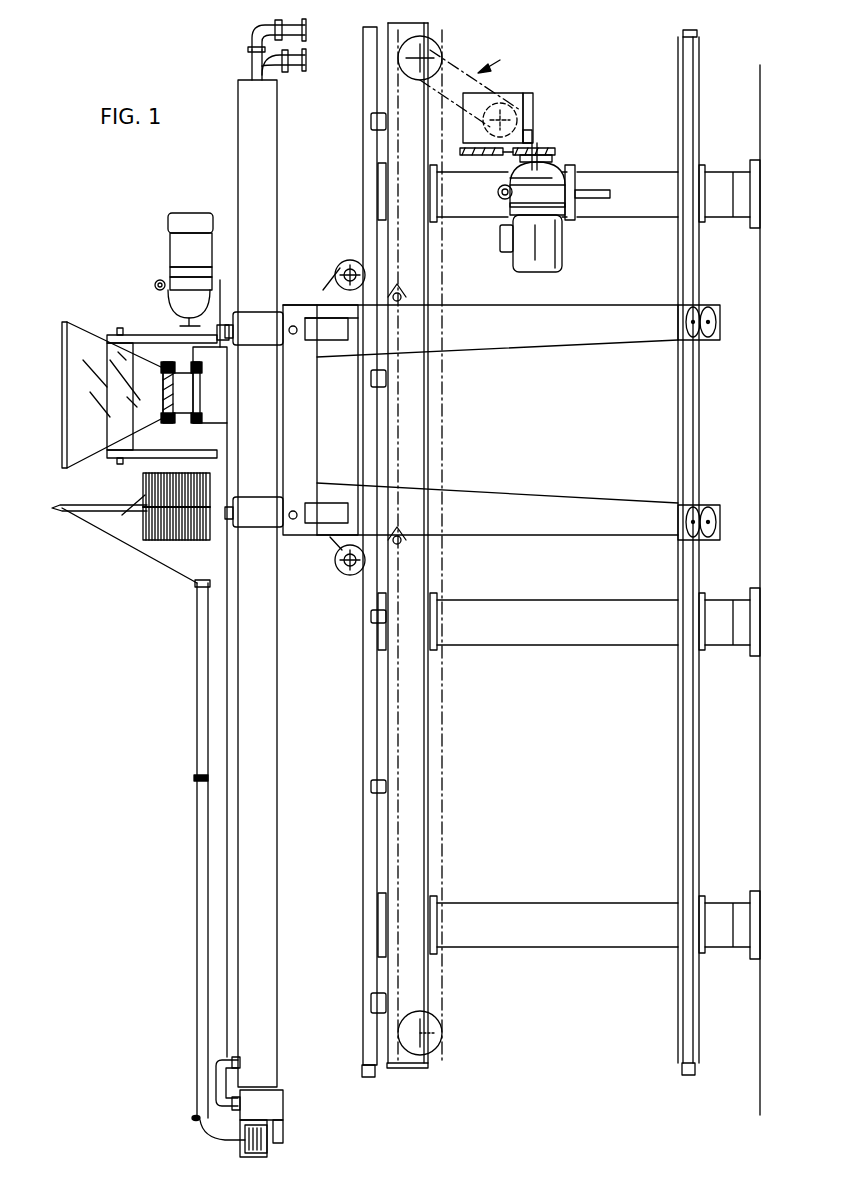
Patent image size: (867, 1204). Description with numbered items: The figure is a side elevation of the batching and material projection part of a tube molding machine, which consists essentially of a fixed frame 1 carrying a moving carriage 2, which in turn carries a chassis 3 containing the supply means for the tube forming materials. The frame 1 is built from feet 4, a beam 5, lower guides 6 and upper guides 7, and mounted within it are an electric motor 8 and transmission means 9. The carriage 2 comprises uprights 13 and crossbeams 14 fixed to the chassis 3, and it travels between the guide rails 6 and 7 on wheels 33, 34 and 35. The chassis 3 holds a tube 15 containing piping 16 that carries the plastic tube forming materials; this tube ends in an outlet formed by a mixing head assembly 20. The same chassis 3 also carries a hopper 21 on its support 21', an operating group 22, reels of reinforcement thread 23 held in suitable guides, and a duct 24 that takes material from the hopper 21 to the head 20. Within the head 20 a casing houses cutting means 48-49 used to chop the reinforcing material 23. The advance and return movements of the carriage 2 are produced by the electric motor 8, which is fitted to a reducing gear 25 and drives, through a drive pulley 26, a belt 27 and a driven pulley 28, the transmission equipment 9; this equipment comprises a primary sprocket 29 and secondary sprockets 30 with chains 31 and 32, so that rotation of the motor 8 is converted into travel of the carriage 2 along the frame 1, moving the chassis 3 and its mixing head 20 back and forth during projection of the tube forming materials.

The fixed frame 1 is at (556, 949).
The moving carriage 2 is at (290, 293).
The chassis 3 is at (227, 310).
The feet 4 is at (598, 908).
The beam 5 is at (417, 790).
The lower guides 6 is at (690, 798).
The upper guides 7 is at (368, 827).
The electric motor 8 is at (555, 250).
The transmission means 9 is at (498, 61).
The uprights 13 is at (553, 517).
The crossbeams 14 is at (300, 487).
The tube 15 is at (265, 725).
The piping 16 is at (250, 40).
The mixing head assembly 20 is at (296, 1121).
The hopper 21 is at (112, 362).
The support 21' is at (167, 362).
The operating group 22 is at (178, 248).
The reinforcement thread 23 is at (143, 483).
The duct 24 is at (217, 885).
The reducing gear 25 is at (533, 100).
The drive pulley 26 is at (555, 149).
The belt 27 is at (498, 180).
The driven pulley 28 is at (473, 157).
The primary sprocket 29 is at (555, 150).
The secondary sprockets 30 is at (440, 50).
The chain 31 is at (498, 97).
The chain 32 is at (445, 425).
The wheels 33 is at (343, 263).
The wheels 34 is at (688, 505).
The wheels 35 is at (718, 505).
The cutting means 48-49 is at (245, 1143).